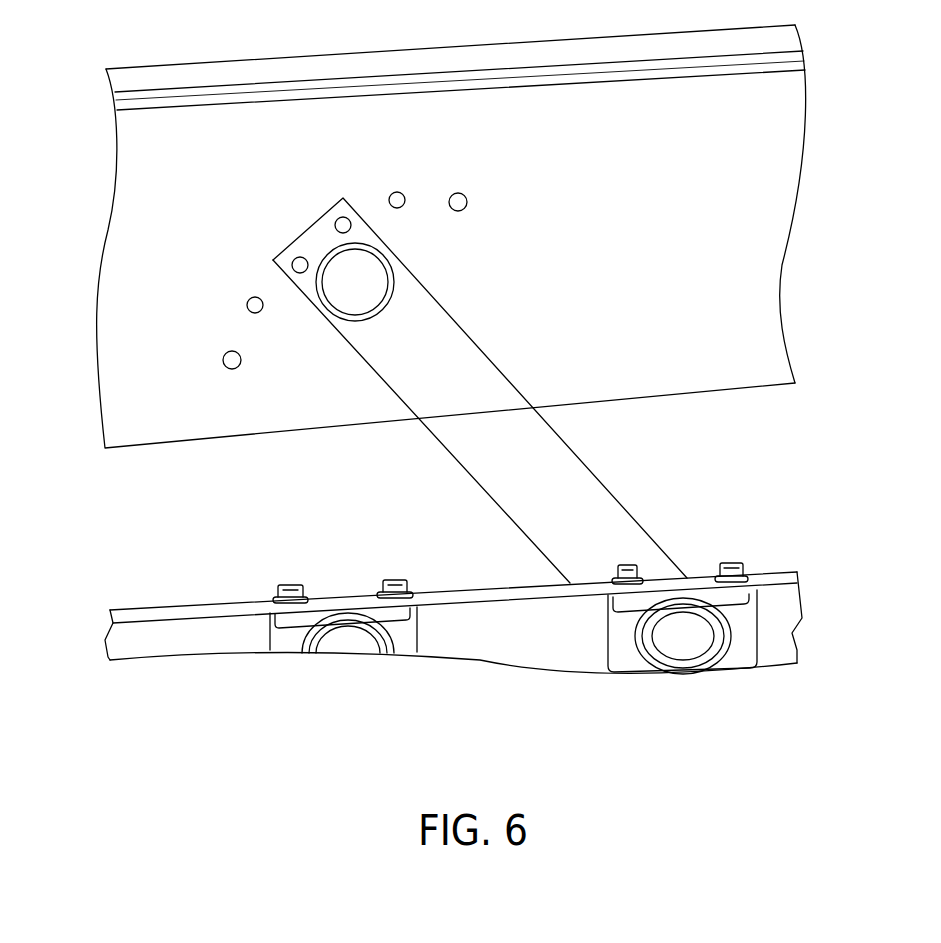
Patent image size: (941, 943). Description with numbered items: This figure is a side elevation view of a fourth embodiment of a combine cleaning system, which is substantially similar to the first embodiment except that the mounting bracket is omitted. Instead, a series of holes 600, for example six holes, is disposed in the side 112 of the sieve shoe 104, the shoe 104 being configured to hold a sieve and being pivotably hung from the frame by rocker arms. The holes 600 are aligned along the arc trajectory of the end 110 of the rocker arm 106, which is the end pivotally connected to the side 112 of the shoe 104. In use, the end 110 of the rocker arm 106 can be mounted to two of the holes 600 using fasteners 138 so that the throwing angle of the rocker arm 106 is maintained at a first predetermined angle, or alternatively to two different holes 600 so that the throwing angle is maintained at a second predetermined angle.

The sieve shoe 104 is at (710, 158).
The rocker arm 106 is at (585, 495).
The second end of the rocker arm 110 is at (355, 282).
The side of the shoe 112 is at (767, 265).
The fasteners 138 is at (298, 257).
The holes 600 is at (458, 193).